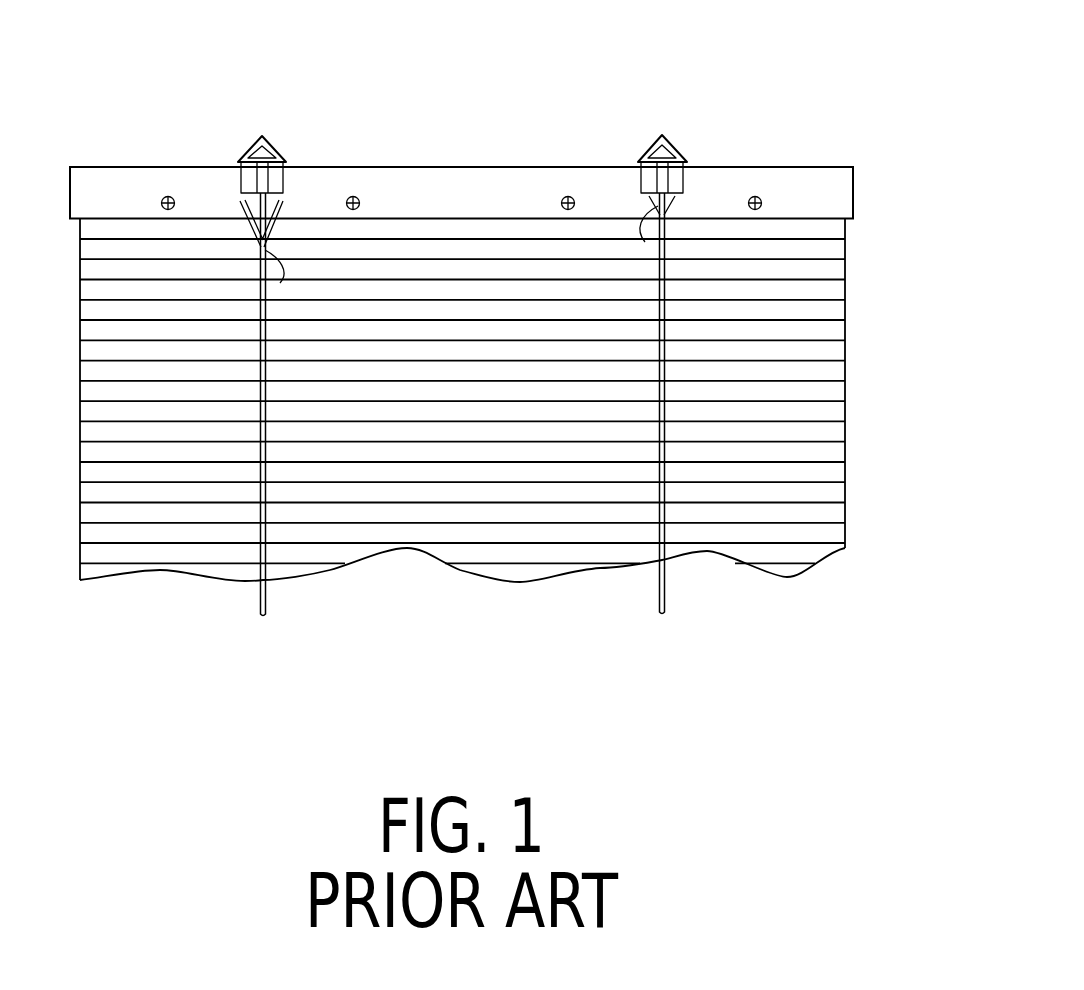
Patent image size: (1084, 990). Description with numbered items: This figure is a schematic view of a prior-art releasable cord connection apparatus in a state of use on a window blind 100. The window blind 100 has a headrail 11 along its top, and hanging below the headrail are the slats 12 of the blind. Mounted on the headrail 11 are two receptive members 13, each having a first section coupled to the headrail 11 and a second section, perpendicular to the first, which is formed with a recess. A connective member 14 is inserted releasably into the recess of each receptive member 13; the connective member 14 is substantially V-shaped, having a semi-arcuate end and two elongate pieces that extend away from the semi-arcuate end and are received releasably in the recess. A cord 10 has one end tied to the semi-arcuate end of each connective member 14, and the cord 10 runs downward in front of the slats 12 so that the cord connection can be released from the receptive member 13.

The window blind 100 is at (770, 135).
The headrail 11 is at (571, 168).
The slats 12 is at (772, 336).
The receptive member 13 is at (245, 183).
The connective member 14 is at (300, 198).
The cord 10 is at (670, 590).